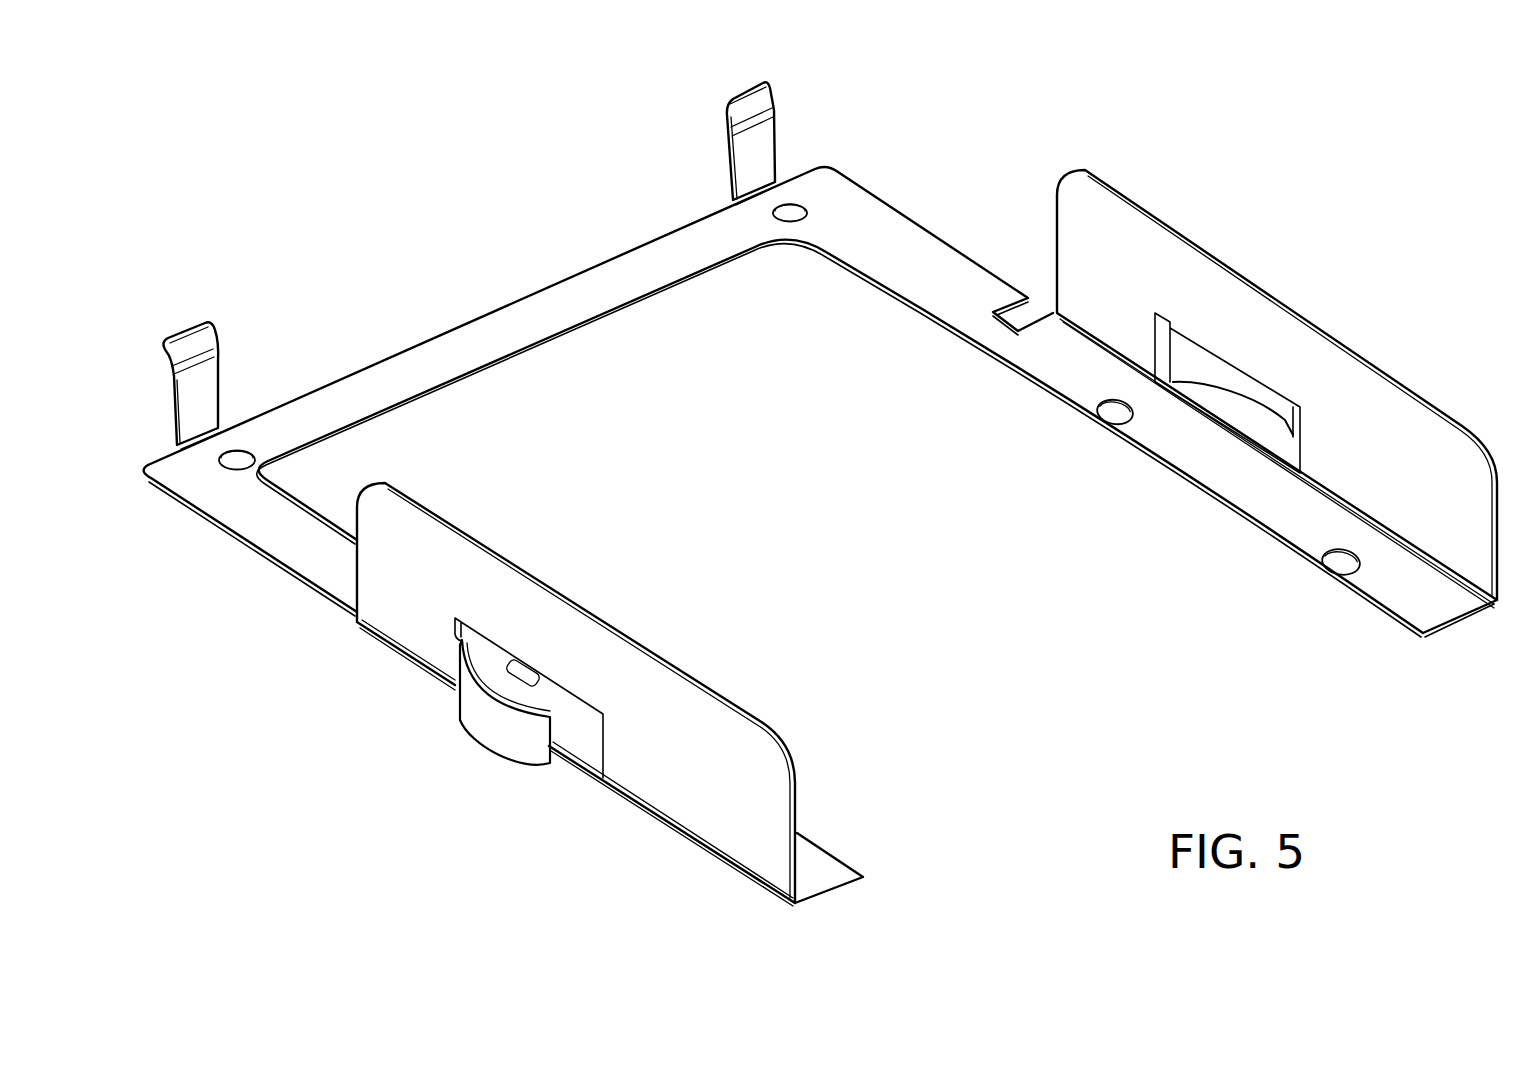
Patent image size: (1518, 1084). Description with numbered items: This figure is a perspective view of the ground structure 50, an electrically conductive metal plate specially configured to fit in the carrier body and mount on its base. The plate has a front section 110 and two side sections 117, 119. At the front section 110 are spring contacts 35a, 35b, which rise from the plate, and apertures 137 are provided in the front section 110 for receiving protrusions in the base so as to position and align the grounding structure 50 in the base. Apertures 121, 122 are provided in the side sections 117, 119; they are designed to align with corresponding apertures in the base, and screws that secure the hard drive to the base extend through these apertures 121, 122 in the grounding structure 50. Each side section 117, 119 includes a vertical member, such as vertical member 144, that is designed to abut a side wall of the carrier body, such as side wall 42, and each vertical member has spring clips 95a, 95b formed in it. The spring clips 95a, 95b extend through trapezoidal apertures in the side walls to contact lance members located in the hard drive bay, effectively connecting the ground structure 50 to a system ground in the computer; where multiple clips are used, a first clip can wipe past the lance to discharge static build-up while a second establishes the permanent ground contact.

The ground structure 50 is at (593, 303).
The front section 110 is at (463, 337).
The spring contact 35a is at (742, 115).
The spring contact 35b is at (202, 355).
The apertures 137 is at (233, 463).
The vertical member 144 is at (710, 772).
The side section 117 is at (333, 672).
The spring clip 95b is at (483, 733).
The side wall 42 is at (1135, 257).
The side section 119 is at (968, 222).
The spring clip 95a is at (1212, 368).
The aperture 121 is at (1108, 413).
The aperture 122 is at (1337, 563).